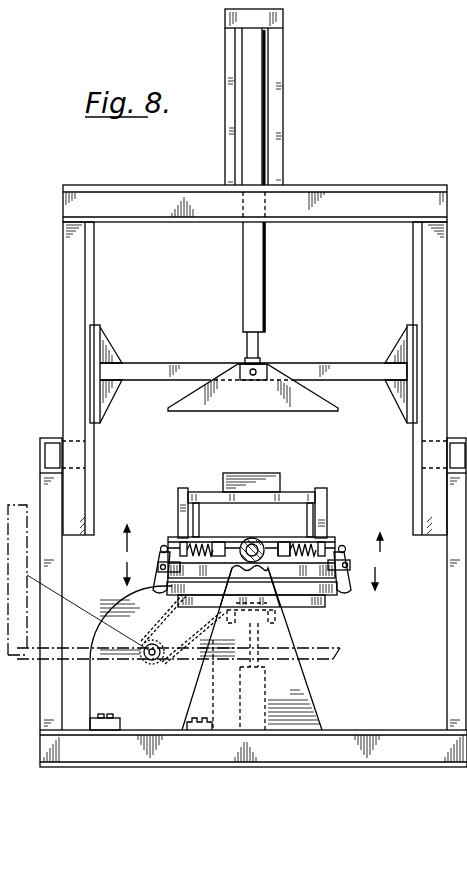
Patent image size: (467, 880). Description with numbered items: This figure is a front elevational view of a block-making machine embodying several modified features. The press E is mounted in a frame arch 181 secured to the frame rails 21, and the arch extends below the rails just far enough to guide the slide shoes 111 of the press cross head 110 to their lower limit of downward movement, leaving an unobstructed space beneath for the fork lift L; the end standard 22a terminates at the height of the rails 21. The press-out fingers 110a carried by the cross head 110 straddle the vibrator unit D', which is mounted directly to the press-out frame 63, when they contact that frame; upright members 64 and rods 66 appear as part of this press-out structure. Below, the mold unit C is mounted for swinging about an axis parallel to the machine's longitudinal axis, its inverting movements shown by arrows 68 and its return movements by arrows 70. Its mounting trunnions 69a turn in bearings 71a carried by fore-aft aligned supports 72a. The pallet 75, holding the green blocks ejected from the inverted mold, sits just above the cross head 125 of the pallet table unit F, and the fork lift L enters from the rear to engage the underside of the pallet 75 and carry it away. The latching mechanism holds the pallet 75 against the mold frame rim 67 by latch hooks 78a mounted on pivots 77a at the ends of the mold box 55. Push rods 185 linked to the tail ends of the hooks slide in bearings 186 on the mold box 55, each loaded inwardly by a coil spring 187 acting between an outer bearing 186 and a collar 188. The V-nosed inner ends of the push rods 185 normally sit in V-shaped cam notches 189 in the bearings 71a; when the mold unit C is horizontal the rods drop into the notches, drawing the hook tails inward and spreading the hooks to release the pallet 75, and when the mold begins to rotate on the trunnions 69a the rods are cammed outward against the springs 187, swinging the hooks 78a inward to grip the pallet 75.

The frame arch 181 is at (70, 185).
The press E is at (273, 344).
The slide shoes 111 is at (96, 349).
The cross head 110 is at (199, 360).
The press-out fingers 110a is at (330, 410).
The frame rails 21 is at (49, 438).
The end standard 22a is at (47, 700).
The supports 72a is at (305, 702).
The pallet table unit F is at (330, 607).
The cross head 125 is at (267, 608).
The fork lift L is at (36, 659).
The mold frame rim 67 is at (203, 612).
The latch hooks 78a is at (157, 594).
The pivots 77a is at (346, 565).
The mold box 55 is at (180, 570).
The vibrator unit D' is at (264, 480).
The press-out frame 63 is at (205, 496).
The posts 64 is at (183, 513).
The rods 66 is at (197, 538).
The mold unit C is at (333, 531).
The pallet 75 is at (307, 601).
The bearings 71a is at (250, 587).
The mounting trunnions 69a is at (238, 557).
The push rods 185 is at (163, 547).
The bearings 186 is at (285, 558).
The coil springs 187 is at (303, 545).
The collar 188 is at (292, 534).
The cam notches 189 is at (253, 538).
The arrows 70 is at (125, 545).
The arrows 68 is at (125, 573).